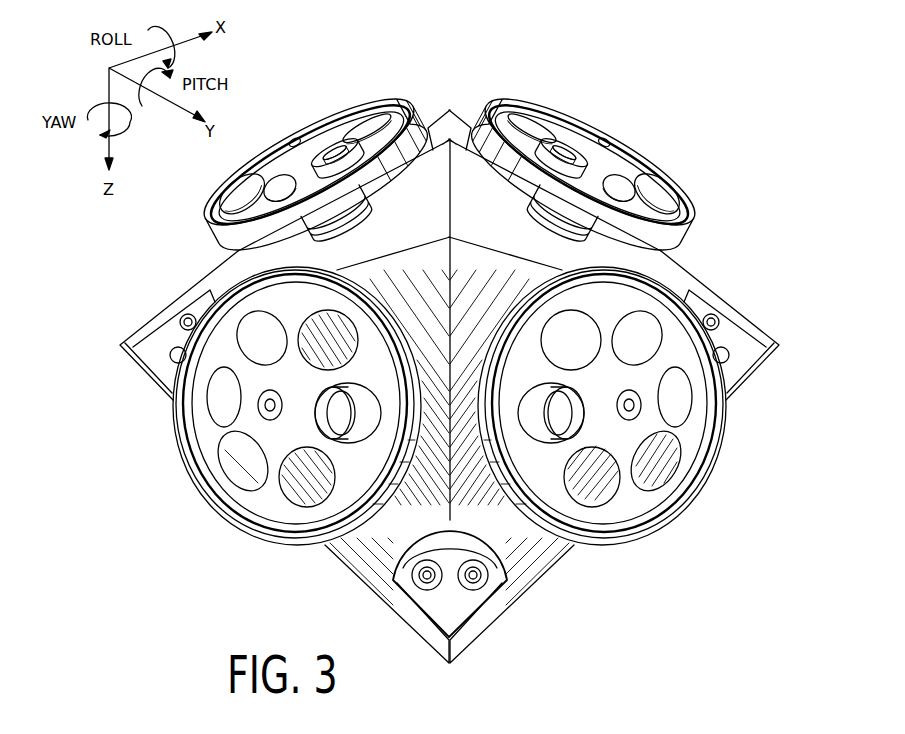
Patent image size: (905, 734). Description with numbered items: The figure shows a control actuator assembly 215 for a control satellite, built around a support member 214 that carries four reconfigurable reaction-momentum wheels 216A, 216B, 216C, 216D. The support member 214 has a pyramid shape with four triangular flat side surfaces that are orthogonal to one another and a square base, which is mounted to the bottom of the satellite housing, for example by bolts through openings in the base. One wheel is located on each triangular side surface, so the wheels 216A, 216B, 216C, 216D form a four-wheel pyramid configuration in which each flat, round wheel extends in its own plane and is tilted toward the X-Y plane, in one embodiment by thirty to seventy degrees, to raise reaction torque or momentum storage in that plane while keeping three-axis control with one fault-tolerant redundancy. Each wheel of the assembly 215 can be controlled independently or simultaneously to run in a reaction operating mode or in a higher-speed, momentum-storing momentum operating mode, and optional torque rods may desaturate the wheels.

The support member 214 is at (507, 220).
The control actuator assembly 215 is at (693, 161).
The reconfigurable reaction-momentum wheel 216A is at (198, 490).
The reconfigurable reaction-momentum wheel 216B is at (728, 425).
The reconfigurable reaction-momentum wheel 216C is at (359, 102).
The reconfigurable reaction-momentum wheel 216D is at (549, 110).